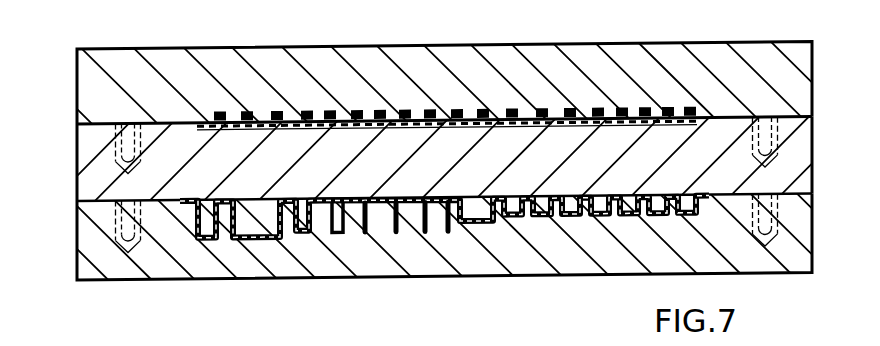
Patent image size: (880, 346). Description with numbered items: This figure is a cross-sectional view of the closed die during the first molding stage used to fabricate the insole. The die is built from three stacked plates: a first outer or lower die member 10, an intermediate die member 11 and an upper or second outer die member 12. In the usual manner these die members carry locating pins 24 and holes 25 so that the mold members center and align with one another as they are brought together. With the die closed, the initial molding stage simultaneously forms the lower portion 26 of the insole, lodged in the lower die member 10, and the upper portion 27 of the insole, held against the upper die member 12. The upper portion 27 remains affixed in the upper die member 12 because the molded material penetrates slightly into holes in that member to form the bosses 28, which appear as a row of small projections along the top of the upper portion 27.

The lower die member 10 is at (92, 257).
The intermediate die member 11 is at (100, 170).
The upper die member 12 is at (95, 90).
The locating pins 24 is at (128, 138).
The holes 25 is at (125, 254).
The lower portion of the insole 26 is at (258, 238).
The upper portion of the insole 27 is at (655, 110).
The bosses 28 is at (220, 112).